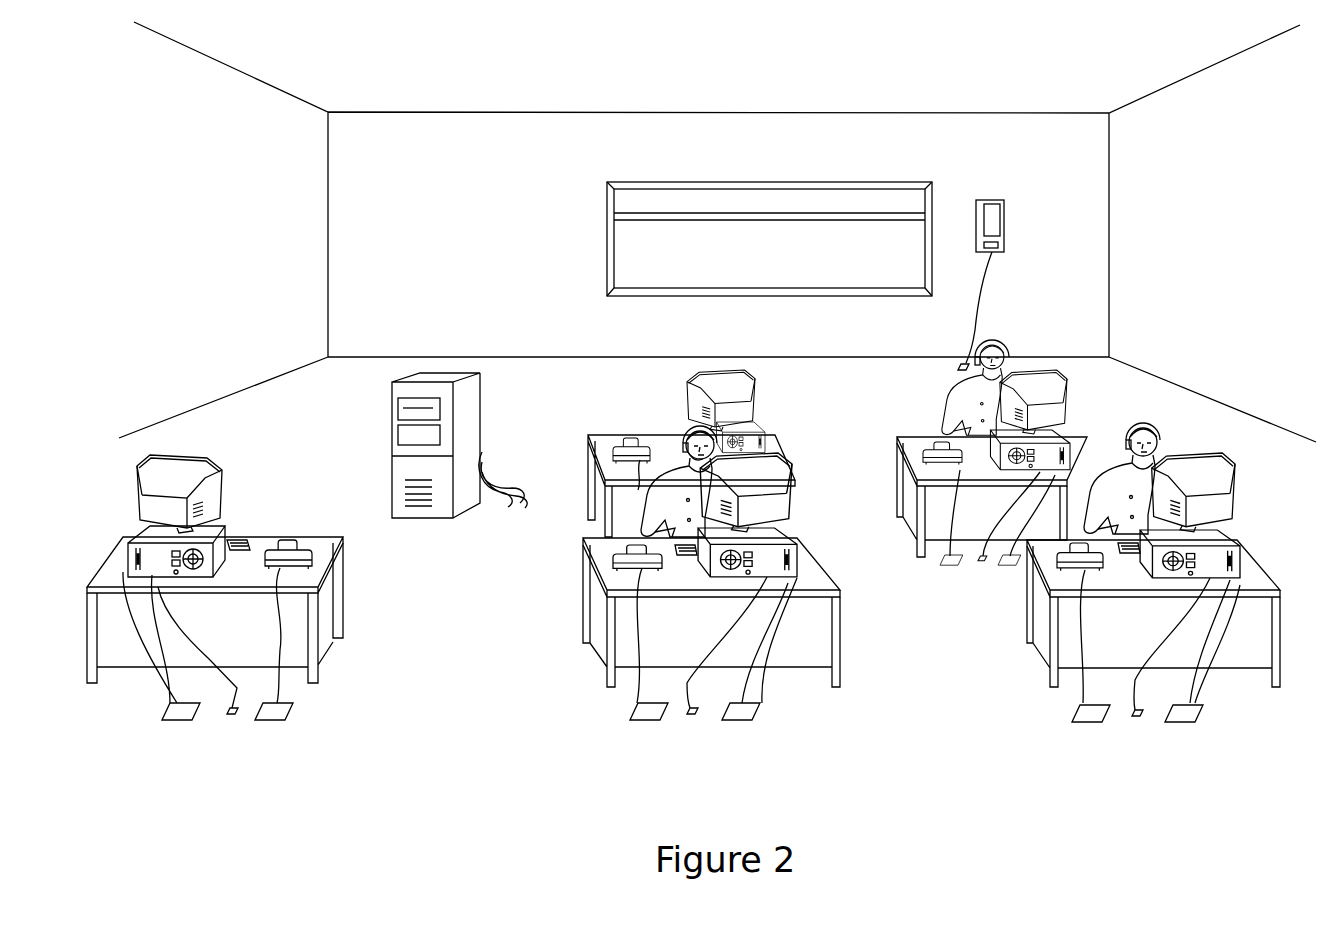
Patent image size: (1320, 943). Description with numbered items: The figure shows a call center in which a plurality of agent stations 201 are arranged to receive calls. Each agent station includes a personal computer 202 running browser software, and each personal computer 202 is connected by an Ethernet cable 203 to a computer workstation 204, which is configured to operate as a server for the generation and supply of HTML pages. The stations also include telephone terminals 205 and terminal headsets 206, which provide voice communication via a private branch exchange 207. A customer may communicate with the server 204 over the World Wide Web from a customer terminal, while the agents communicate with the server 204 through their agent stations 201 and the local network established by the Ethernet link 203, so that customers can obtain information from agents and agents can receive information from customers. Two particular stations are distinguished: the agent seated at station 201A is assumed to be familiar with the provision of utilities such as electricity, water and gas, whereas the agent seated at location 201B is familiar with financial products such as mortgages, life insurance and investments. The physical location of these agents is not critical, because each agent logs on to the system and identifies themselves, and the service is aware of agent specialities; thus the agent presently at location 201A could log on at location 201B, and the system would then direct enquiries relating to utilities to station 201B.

The agent station 201 is at (588, 672).
The agent station 201A is at (871, 557).
The agent station 201B is at (1190, 776).
The personal computer 202 is at (190, 527).
The Ethernet cable 203 is at (508, 478).
The computer workstation 204 is at (432, 390).
The telephone terminal 205 is at (652, 562).
The terminal headset 206 is at (680, 435).
The private branch exchange 207 is at (990, 212).